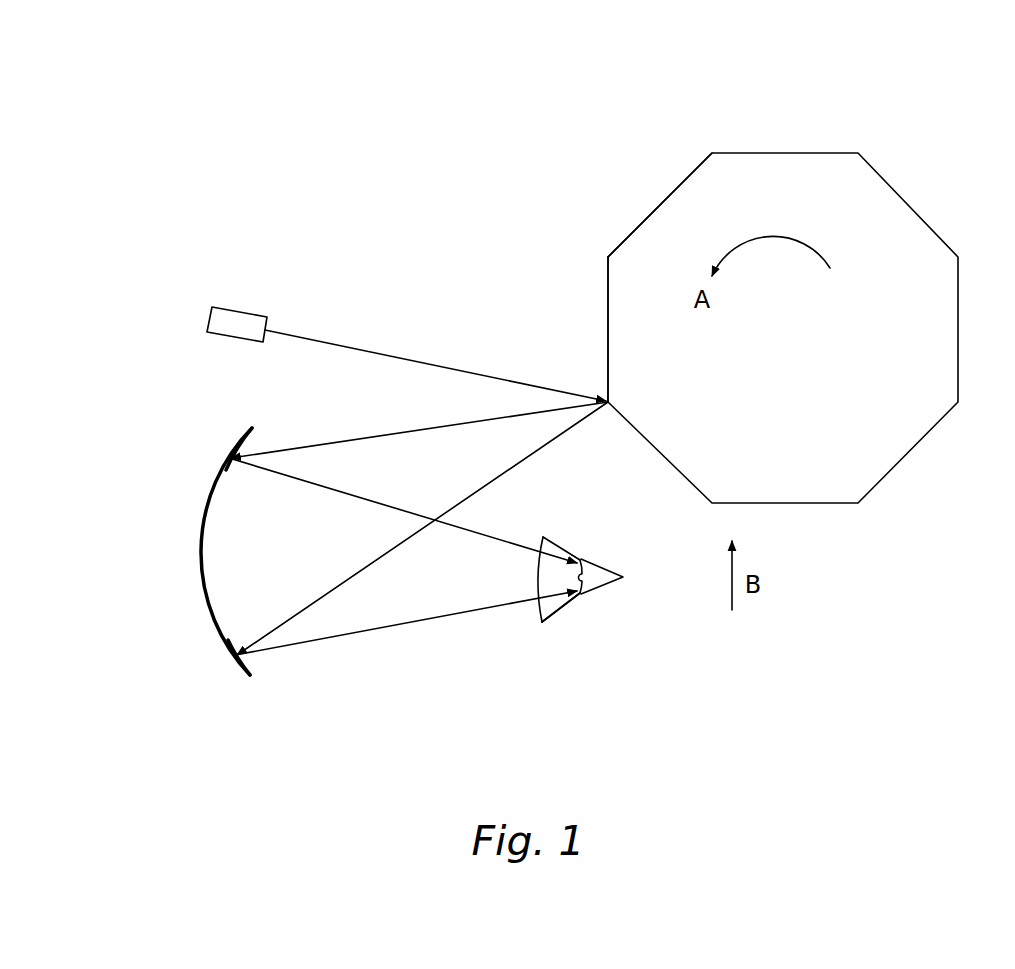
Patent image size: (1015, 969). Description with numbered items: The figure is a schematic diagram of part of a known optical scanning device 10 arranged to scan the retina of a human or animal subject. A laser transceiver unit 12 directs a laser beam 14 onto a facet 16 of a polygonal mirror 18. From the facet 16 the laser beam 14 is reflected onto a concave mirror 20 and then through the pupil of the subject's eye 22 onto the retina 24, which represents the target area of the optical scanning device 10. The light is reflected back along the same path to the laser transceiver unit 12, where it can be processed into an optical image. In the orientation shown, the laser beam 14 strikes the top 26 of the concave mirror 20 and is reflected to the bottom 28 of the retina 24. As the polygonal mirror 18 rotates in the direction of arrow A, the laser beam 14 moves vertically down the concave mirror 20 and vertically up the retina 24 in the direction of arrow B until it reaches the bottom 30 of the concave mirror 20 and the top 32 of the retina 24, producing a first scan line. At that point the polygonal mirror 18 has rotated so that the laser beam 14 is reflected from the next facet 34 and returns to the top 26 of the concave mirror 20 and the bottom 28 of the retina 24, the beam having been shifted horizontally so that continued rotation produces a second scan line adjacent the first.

The optical scanning device 10 is at (440, 127).
The laser transceiver unit 12 is at (242, 312).
The laser beam 14 is at (422, 362).
The facet 16 is at (608, 332).
The polygonal mirror 18 is at (776, 190).
The concave mirror 20 is at (202, 535).
The eye 22 is at (578, 558).
The retina 24 is at (585, 587).
The top of the concave mirror 26 is at (231, 458).
The bottom of the retina 28 is at (578, 595).
The bottom of the concave mirror 30 is at (233, 657).
The top of the retina 32 is at (582, 562).
The next facet 34 is at (660, 196).